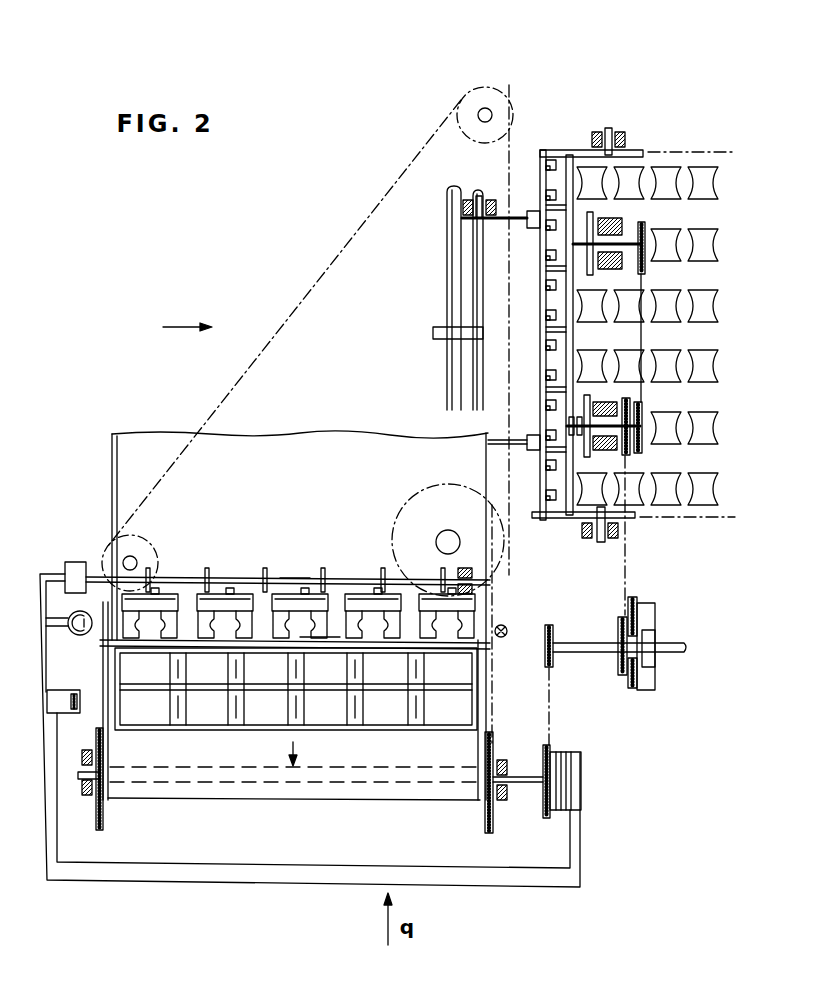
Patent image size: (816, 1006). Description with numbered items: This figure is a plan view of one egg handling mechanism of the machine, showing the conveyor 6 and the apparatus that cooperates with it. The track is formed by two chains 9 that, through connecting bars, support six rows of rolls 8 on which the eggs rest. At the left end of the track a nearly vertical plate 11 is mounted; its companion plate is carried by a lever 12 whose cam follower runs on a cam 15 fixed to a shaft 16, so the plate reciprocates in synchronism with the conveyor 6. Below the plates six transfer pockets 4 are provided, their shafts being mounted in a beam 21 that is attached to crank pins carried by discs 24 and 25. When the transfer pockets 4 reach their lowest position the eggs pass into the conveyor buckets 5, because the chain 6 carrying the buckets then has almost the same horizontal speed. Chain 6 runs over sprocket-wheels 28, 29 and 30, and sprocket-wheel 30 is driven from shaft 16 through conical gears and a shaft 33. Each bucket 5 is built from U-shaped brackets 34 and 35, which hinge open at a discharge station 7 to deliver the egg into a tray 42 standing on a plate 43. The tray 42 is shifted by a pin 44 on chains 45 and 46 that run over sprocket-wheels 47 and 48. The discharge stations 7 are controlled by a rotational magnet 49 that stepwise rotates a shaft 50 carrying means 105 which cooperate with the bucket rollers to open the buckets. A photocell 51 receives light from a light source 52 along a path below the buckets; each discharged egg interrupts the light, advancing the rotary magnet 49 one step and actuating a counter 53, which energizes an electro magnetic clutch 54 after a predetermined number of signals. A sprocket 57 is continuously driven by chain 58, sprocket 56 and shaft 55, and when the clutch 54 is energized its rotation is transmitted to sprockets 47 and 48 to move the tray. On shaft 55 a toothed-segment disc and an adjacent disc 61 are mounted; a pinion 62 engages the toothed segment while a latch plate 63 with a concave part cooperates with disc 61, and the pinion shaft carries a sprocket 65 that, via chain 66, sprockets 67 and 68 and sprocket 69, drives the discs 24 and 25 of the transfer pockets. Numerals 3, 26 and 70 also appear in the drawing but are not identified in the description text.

The guide rod station 3 is at (481, 395).
The transfer pocket 4 is at (591, 335).
The conveyor bucket 5 is at (222, 600).
The conveyor 6 is at (360, 225).
The discharge station 7 is at (289, 568).
The roll 8 is at (666, 165).
The chain 9 is at (703, 150).
The plate 11 is at (513, 153).
The lever 12 is at (498, 205).
The cam 15 is at (434, 331).
The shaft 16 is at (447, 400).
The beam 21 is at (566, 519).
The disc 24 is at (593, 268).
The disc 25 is at (590, 455).
The bearing 26 is at (622, 240).
The sprocket-wheel 28 is at (150, 540).
The sprocket-wheel 29 is at (471, 92).
The sprocket-wheel 30 is at (405, 503).
The shaft 33 is at (448, 530).
The U-shaped bracket 34 is at (356, 638).
The U-shaped bracket 35 is at (322, 643).
The tray 42 is at (479, 718).
The plate 43 is at (293, 431).
The pin 44 is at (265, 645).
The chain 45 is at (100, 681).
The chain 46 is at (493, 676).
The sprocket-wheel 47 is at (103, 824).
The sprocket-wheel 48 is at (484, 832).
The rotational magnet 49 is at (74, 561).
The shaft 50 is at (346, 577).
The photocell 51 is at (76, 635).
The light source 52 is at (504, 626).
The counter 53 is at (74, 714).
The electro magnetic clutch 54 is at (583, 781).
The shaft 55 is at (587, 653).
The sprocket 56 is at (549, 625).
The sprocket 57 is at (546, 819).
The chain 58 is at (551, 700).
The disc 61 is at (656, 614).
The pinion 62 is at (630, 680).
The latch plate 63 is at (651, 666).
The sprocket 65 is at (618, 622).
The chain 66 is at (626, 548).
The sprocket 67 is at (632, 454).
The sprocket 68 is at (642, 402).
The sprocket 69 is at (646, 224).
The chain 70 is at (641, 337).
The means for opening buckets 105 is at (265, 567).